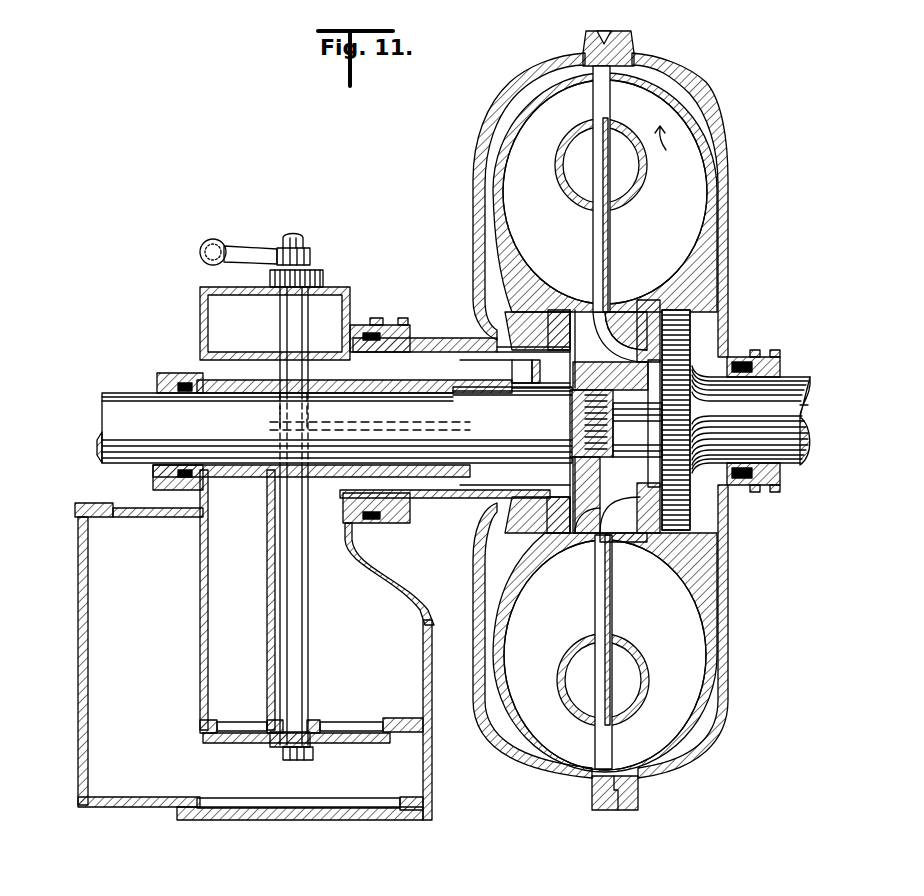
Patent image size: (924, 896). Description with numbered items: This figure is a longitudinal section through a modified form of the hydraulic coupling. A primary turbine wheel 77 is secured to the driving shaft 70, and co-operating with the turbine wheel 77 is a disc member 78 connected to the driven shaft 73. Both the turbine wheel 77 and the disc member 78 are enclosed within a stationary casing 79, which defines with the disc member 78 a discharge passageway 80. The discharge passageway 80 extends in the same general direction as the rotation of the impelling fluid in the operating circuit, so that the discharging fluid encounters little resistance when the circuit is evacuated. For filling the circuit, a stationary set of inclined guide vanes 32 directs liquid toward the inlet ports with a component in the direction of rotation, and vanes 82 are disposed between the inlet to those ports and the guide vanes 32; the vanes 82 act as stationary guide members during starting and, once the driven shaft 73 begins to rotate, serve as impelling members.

The driving shaft 70 is at (788, 455).
The driven shaft 73 is at (128, 395).
The primary turbine wheel 77 is at (703, 168).
The disc member 78 is at (505, 223).
The stationary casing 79 is at (687, 90).
The discharge passageway 80 is at (495, 118).
The guide vanes 32 is at (520, 378).
The vanes 82 is at (545, 377).